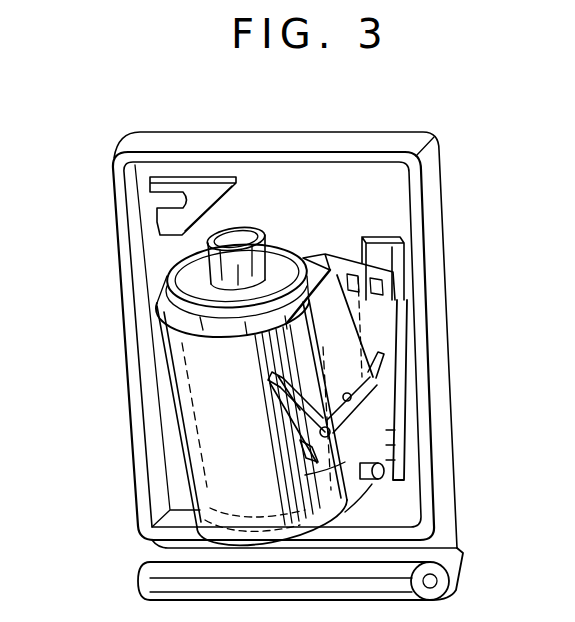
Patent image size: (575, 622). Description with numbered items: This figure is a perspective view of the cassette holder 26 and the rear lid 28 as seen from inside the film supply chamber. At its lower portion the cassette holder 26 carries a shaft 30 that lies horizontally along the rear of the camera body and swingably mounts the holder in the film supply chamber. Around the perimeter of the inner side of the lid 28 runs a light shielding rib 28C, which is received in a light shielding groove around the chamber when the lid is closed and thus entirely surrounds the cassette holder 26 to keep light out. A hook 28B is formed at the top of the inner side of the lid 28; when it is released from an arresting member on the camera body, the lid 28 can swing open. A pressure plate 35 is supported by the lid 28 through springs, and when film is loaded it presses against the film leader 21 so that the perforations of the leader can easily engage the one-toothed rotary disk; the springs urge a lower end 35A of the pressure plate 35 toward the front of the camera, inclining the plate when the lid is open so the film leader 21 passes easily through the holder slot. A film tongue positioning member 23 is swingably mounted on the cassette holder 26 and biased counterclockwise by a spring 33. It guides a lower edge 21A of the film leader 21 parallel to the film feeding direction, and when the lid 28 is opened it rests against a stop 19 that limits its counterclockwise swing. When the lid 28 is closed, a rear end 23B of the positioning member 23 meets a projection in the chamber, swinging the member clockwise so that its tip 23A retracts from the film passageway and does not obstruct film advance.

The rear lid 28 is at (364, 190).
The light shielding rib 28C is at (417, 199).
The hook 28B is at (158, 228).
The cassette holder 26 is at (165, 318).
The stop 19 is at (343, 392).
The film leader 21 is at (372, 318).
The lower edge of film leader 21A is at (380, 352).
The film tongue positioning member 23 is at (298, 418).
The rear end of positioning member 23B is at (284, 396).
The tip of positioning member 23A is at (375, 376).
The pressure plate 35 is at (405, 405).
The lower end of pressure plate 35A is at (388, 453).
The spring 33 is at (318, 470).
The shaft 30 is at (372, 484).